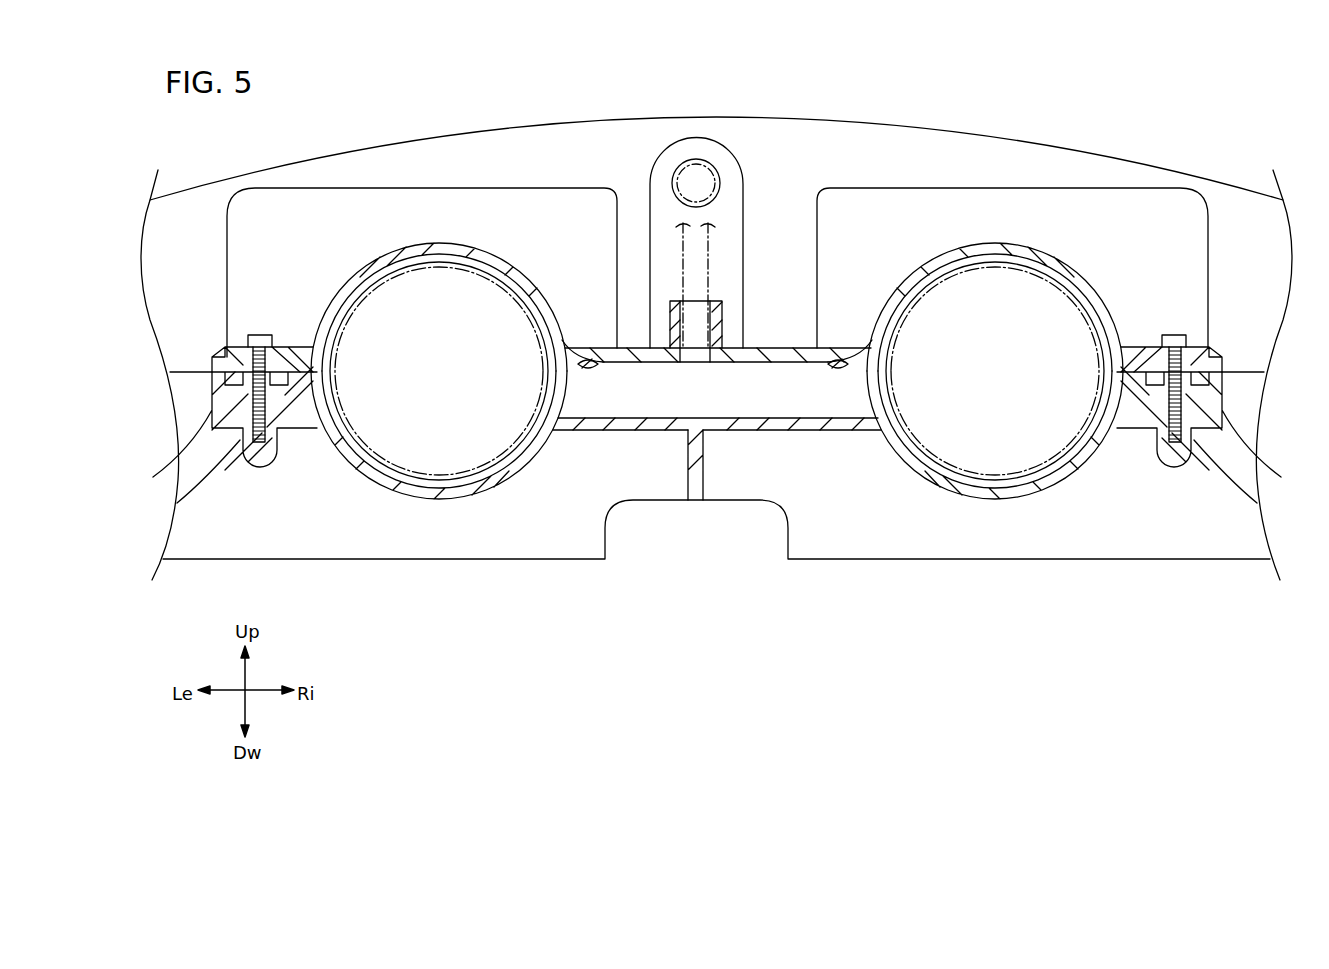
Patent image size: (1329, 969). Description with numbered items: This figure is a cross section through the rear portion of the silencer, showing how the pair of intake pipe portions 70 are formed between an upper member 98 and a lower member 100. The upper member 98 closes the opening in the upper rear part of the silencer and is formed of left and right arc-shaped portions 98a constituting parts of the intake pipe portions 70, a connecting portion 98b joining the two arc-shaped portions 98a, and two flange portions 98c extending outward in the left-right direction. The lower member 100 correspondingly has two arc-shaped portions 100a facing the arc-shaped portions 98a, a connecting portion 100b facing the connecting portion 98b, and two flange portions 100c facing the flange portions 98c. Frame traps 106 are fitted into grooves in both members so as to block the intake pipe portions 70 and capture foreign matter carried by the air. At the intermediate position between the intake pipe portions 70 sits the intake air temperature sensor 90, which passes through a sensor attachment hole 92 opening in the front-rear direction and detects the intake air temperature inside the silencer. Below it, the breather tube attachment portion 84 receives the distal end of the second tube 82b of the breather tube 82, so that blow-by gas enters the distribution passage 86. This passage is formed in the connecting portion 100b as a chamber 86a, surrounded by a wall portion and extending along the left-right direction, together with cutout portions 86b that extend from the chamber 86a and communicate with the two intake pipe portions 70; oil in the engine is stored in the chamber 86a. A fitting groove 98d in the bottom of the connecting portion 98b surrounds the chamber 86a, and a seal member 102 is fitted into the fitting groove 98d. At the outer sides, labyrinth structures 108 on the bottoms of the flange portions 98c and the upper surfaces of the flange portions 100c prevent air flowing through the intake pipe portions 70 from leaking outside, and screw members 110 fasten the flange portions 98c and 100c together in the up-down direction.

The intake pipe portions 70 is at (383, 250).
The breather tube 82 is at (741, 281).
The second tube 82b is at (720, 250).
The breather tube attachment portion 84 is at (717, 320).
The distribution passage 86 is at (721, 430).
The chamber 86a is at (655, 418).
The cutout portions 86b is at (566, 432).
The intake air temperature sensor 90 is at (702, 178).
The sensor attachment hole 92 is at (676, 180).
The upper member 98 is at (715, 305).
The arc-shaped portions 98a is at (432, 246).
The connecting portion 98b is at (850, 352).
The flange portions 98c is at (1222, 318).
The fitting groove 98d is at (560, 372).
The lower member 100 is at (717, 451).
The arc-shaped portions 100a is at (445, 500).
The connecting portion 100b is at (722, 429).
The flange portions 100c is at (305, 422).
The seal member 102 is at (587, 373).
The frame traps 106 is at (366, 277).
The labyrinth structures 108 is at (213, 405).
The screw members 110 is at (258, 335).